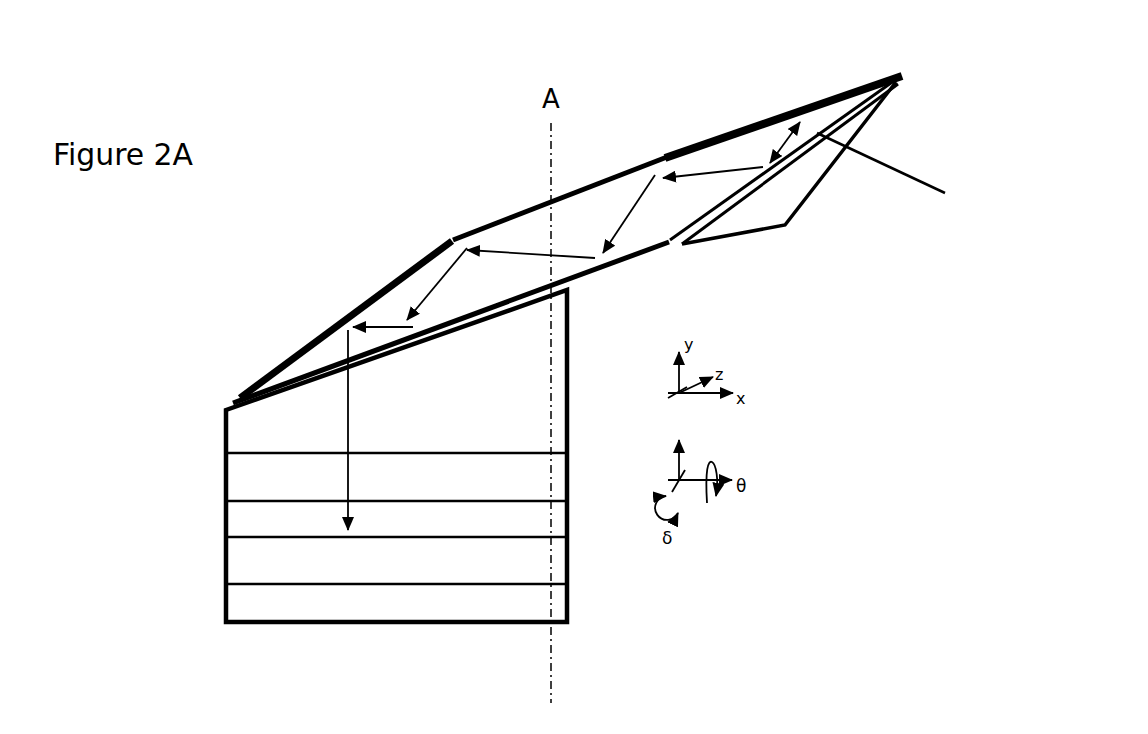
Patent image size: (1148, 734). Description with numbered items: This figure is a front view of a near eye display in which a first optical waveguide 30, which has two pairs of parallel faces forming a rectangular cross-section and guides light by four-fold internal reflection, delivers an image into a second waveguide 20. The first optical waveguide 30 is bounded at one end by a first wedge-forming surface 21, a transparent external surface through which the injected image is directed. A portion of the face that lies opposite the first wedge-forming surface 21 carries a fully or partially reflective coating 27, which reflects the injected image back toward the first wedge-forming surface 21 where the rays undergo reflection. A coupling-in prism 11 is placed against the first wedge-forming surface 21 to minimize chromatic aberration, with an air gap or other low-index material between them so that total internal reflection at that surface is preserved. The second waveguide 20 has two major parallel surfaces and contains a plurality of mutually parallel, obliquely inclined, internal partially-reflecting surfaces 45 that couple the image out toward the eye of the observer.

The reflective coating 27 is at (703, 141).
The first wedge-forming surface 21 is at (822, 127).
The coupling-in prism 11 is at (789, 163).
The first optical waveguide 30 is at (451, 280).
The second waveguide 20 is at (358, 456).
The partially-reflecting surfaces 45 is at (248, 503).